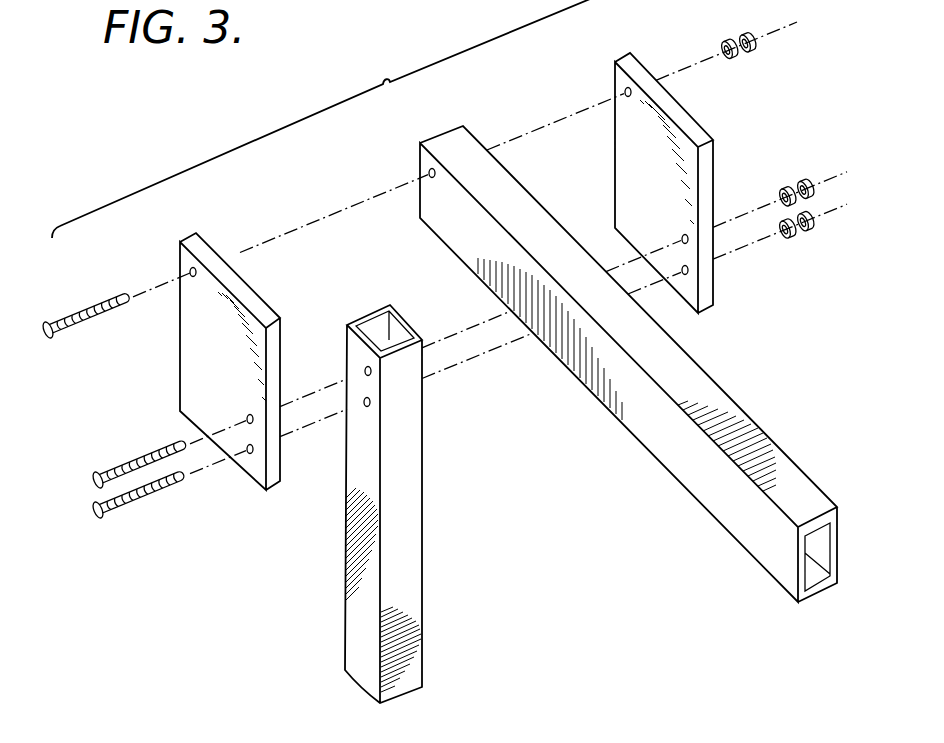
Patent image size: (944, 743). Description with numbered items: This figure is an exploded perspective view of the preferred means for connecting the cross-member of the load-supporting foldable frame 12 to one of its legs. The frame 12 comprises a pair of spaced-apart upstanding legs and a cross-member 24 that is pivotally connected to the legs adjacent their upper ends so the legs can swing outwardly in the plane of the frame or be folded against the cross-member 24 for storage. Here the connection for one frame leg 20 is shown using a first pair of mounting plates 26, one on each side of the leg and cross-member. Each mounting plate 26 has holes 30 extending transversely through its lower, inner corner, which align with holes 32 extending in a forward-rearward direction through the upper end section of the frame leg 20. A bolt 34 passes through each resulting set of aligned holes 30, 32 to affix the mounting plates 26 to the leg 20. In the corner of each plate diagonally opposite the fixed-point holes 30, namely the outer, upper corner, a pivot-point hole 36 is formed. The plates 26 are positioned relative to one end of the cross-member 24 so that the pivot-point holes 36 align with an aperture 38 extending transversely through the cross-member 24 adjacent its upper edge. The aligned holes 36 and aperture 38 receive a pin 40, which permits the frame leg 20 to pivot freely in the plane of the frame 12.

The foldable frame 12 is at (300, 568).
The frame leg 20 is at (418, 543).
The cross-member 24 is at (730, 535).
The mounting plate 26 is at (185, 379).
The hole 30 is at (248, 453).
The hole 32 is at (372, 374).
The bolt 34 is at (90, 508).
The pivot-point hole 36 is at (190, 270).
The aperture 38 is at (428, 172).
The pin 40 is at (47, 337).